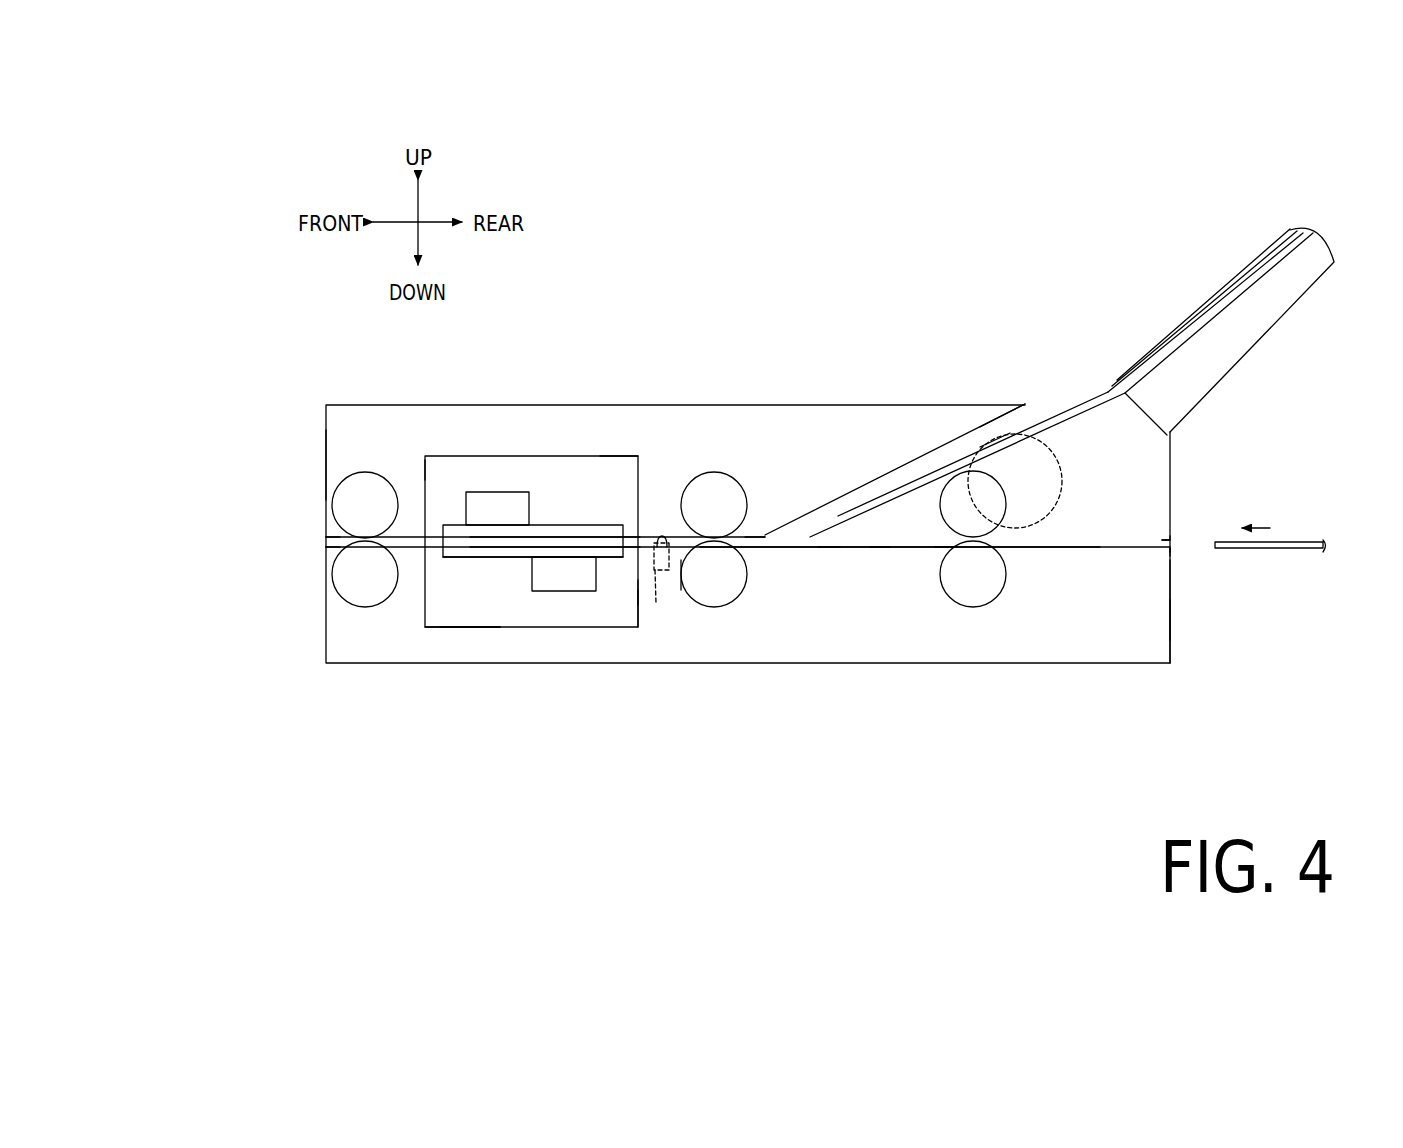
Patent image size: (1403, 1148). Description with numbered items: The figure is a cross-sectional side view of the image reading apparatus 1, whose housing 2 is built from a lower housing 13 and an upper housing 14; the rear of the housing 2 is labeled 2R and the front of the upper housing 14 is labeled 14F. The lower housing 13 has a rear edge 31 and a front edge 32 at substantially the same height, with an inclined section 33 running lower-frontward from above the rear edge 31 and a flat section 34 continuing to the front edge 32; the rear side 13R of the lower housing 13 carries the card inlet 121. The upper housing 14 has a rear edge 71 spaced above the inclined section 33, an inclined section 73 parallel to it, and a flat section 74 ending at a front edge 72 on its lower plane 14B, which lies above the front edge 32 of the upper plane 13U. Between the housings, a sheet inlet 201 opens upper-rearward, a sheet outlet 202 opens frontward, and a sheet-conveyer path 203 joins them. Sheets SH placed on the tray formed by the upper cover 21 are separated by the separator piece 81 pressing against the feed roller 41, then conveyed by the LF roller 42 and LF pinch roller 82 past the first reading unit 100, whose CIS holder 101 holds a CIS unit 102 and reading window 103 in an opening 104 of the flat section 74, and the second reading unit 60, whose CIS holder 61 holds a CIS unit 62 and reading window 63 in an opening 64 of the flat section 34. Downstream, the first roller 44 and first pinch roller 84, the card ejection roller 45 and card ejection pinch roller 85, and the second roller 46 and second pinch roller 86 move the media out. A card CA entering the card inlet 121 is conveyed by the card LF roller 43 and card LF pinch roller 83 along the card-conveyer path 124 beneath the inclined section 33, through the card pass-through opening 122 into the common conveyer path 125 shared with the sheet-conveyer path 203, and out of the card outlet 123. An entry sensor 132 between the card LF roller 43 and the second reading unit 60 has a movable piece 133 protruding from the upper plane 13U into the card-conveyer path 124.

The image reading apparatus 1 is at (760, 840).
The housing 2 is at (320, 347).
The rear surface 2R is at (1186, 616).
The lower housing 13 is at (1061, 672).
The upper plane of the lower housing 13U is at (890, 549).
The rear side of the lower housing 13R is at (1172, 661).
The upper housing 14 is at (801, 400).
The front surface of upper housing 14F is at (326, 462).
The lower plane of the upper housing 14B is at (750, 535).
The upper cover 21 is at (1283, 307).
The sheet SH is at (1203, 325).
The card CA is at (1298, 548).
The rear edge 31 is at (1180, 551).
The front edge 32 is at (323, 546).
The inclined section 33 is at (838, 516).
The flat section 34 is at (658, 535).
The feed roller 41 is at (1012, 428).
The LF roller 42 is at (720, 606).
The card LF roller 43 is at (988, 536).
The first roller 44 is at (349, 634).
The card ejection roller 45 is at (349, 634).
The second roller 46 is at (368, 607).
The second reading unit 60 is at (452, 631).
The CIS holder 61 is at (465, 627).
The CIS unit 62 is at (565, 590).
The reading window 63 is at (512, 556).
The opening 64 is at (638, 594).
The rear edge 71 is at (1012, 433).
The front edge 72 is at (318, 527).
The inclined section 73 is at (893, 468).
The flat section 74 is at (682, 572).
The separator piece 81 is at (957, 468).
The LF pinch roller 82 is at (712, 478).
The card LF pinch roller 83 is at (1019, 568).
The first pinch roller 84 is at (395, 448).
The card ejection pinch roller 85 is at (395, 448).
The second pinch roller 86 is at (370, 478).
The first reading unit 100 is at (453, 450).
The CIS holder 101 is at (607, 462).
The CIS unit 102 is at (495, 496).
The reading window 103 is at (555, 526).
The opening 104 is at (426, 470).
The card inlet 121 is at (1180, 541).
The card pass-through opening 122 is at (880, 549).
The card outlet 123 is at (258, 552).
The card-conveyer path 124 is at (945, 549).
The common conveyer path 125 is at (818, 543).
The entry sensor 132 is at (637, 596).
The movable piece 133 is at (669, 544).
The sheet inlet 201 is at (1030, 418).
The sheet outlet 202 is at (323, 539).
The sheet-conveyer path 203 is at (481, 548).